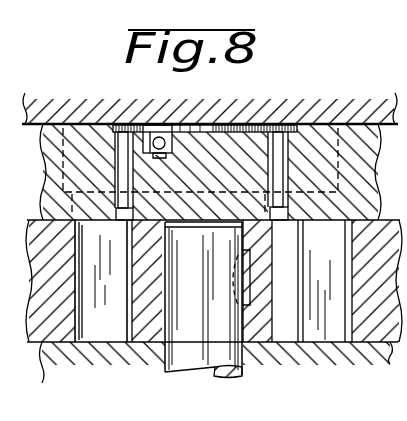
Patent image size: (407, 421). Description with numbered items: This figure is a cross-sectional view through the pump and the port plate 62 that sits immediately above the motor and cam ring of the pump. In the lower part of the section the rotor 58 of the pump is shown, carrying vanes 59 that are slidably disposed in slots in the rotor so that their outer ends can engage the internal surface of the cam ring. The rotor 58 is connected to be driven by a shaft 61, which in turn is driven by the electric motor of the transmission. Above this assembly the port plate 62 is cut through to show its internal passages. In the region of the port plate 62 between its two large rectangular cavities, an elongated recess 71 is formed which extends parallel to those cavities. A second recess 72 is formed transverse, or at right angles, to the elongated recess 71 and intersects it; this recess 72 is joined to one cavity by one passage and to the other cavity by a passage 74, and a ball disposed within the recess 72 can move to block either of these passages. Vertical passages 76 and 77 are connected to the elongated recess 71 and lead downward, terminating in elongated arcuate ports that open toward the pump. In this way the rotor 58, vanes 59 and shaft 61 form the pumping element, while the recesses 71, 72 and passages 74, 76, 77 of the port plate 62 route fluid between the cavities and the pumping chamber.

The rotor 58 is at (259, 335).
The vanes 59 is at (332, 335).
The shaft 61 is at (171, 374).
The port plate 62 is at (361, 118).
The elongated recess 71 is at (262, 125).
The recess 72 is at (203, 125).
The passage 74 is at (153, 123).
The vertical passage 76 is at (284, 163).
The vertical passage 77 is at (118, 165).